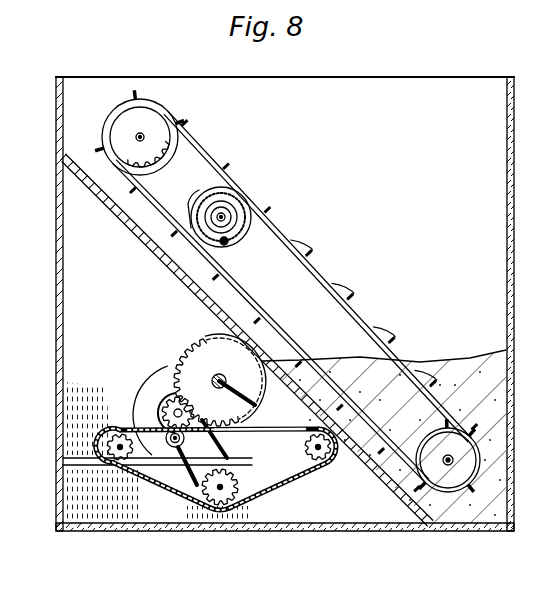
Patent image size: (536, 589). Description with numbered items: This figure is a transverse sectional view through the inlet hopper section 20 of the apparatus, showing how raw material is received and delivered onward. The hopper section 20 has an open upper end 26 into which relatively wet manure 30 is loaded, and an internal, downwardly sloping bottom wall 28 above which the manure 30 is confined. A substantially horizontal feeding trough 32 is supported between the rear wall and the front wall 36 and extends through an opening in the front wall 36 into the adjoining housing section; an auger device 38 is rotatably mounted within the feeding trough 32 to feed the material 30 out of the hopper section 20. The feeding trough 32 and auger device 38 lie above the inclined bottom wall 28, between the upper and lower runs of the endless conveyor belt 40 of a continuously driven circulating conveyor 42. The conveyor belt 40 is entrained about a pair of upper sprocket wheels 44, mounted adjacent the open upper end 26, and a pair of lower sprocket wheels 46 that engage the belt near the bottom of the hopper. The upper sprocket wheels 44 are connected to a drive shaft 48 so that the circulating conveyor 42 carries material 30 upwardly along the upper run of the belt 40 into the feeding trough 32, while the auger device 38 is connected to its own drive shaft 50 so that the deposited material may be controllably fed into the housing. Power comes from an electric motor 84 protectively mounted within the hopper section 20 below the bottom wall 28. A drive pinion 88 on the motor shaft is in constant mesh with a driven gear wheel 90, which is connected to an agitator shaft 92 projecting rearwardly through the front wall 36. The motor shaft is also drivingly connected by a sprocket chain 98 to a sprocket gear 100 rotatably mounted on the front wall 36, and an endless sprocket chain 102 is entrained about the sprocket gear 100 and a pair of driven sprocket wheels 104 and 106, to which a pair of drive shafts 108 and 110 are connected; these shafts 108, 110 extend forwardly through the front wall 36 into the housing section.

The hopper section 20 is at (44, 269).
The open upper end 26 is at (175, 78).
The bottom wall 28 is at (160, 253).
The manure 30 is at (457, 377).
The feeding trough 32 is at (227, 247).
The front wall 36 is at (353, 92).
The auger device 38 is at (212, 192).
The endless conveyor belt 40 is at (325, 280).
The circulating conveyor 42 is at (208, 144).
The upper sprocket wheels 44 is at (123, 127).
The lower sprocket wheels 46 is at (448, 485).
The drive shaft 48 is at (143, 136).
The drive shaft 50 is at (224, 214).
The electric motor 84 is at (148, 405).
The drive pinion 88 is at (174, 395).
The driven gear wheel 90 is at (207, 348).
The agitator shaft 92 is at (240, 388).
The sprocket chain 98 is at (233, 450).
The sprocket gear 100 is at (224, 502).
The endless sprocket chain 102 is at (146, 482).
The driven sprocket wheel 104 is at (121, 461).
The driven sprocket wheel 106 is at (330, 460).
The drive shaft 108 is at (108, 437).
The drive shaft 110 is at (304, 480).